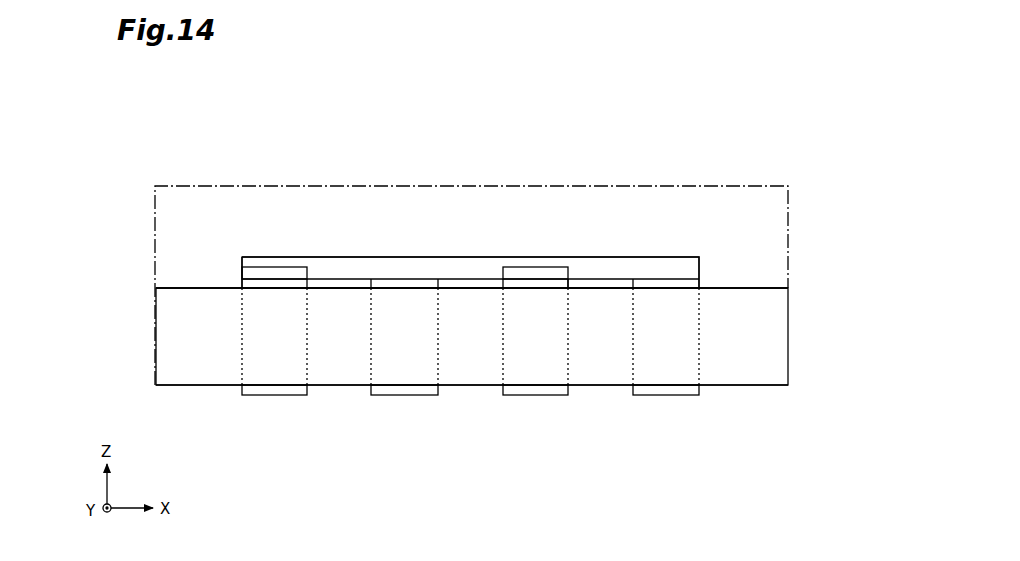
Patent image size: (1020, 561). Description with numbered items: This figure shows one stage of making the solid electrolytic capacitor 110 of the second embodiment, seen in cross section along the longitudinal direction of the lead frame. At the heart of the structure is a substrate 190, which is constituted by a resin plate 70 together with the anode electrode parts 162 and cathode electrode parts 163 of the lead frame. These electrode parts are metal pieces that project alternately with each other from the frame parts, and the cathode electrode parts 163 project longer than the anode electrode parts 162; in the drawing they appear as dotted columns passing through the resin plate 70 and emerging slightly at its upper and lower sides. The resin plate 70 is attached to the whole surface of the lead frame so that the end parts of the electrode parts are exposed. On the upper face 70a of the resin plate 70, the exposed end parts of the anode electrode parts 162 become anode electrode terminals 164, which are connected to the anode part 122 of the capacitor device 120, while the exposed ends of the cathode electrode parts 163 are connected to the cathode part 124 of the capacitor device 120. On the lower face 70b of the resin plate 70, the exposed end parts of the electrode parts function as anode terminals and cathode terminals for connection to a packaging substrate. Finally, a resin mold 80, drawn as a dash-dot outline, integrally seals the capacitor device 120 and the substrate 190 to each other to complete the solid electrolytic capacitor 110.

The solid electrolytic capacitor 110 is at (781, 103).
The resin mold 80 is at (790, 227).
The resin plate 70 is at (790, 343).
The upper face of resin plate 70a is at (178, 288).
The lower face of resin plate 70b is at (180, 385).
The substrate 190 is at (790, 289).
The capacitor device 120 is at (520, 255).
The cathode part 124 is at (445, 257).
The anode part 122 is at (282, 267).
The anode electrode terminal 164 is at (298, 285).
The anode electrode part 162 is at (309, 337).
The cathode electrode part 163 is at (439, 337).